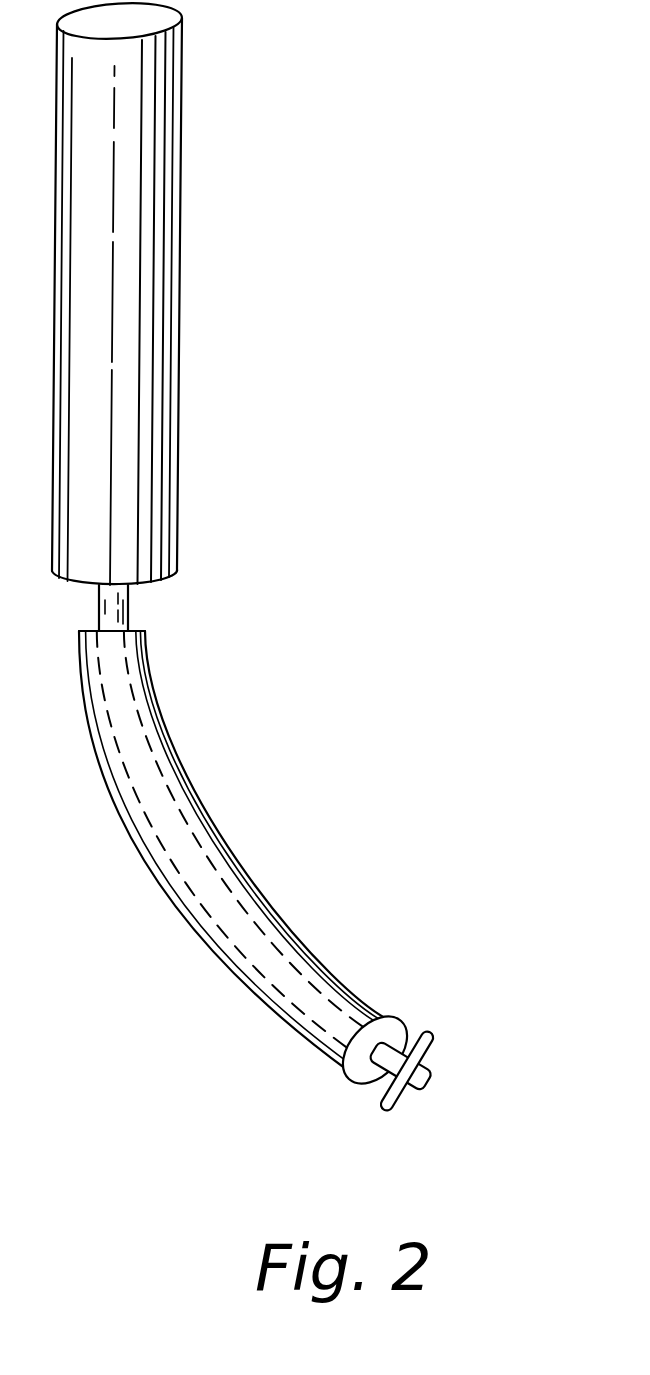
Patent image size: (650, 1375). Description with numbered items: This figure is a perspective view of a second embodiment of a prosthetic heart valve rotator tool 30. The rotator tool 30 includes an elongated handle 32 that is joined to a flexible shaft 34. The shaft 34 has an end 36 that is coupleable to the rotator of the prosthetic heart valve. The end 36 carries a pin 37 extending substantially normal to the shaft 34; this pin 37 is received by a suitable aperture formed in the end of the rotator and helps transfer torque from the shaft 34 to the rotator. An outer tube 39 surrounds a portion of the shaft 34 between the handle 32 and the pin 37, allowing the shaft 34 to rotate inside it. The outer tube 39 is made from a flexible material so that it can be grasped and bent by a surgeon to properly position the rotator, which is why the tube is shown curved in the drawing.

The prosthetic heart valve rotator tool 30 is at (389, 358).
The elongated handle 32 is at (180, 262).
The flexible shaft 34 is at (192, 836).
The end 36 is at (447, 1040).
The pin 37 is at (433, 1031).
The outer tube 39 is at (164, 731).